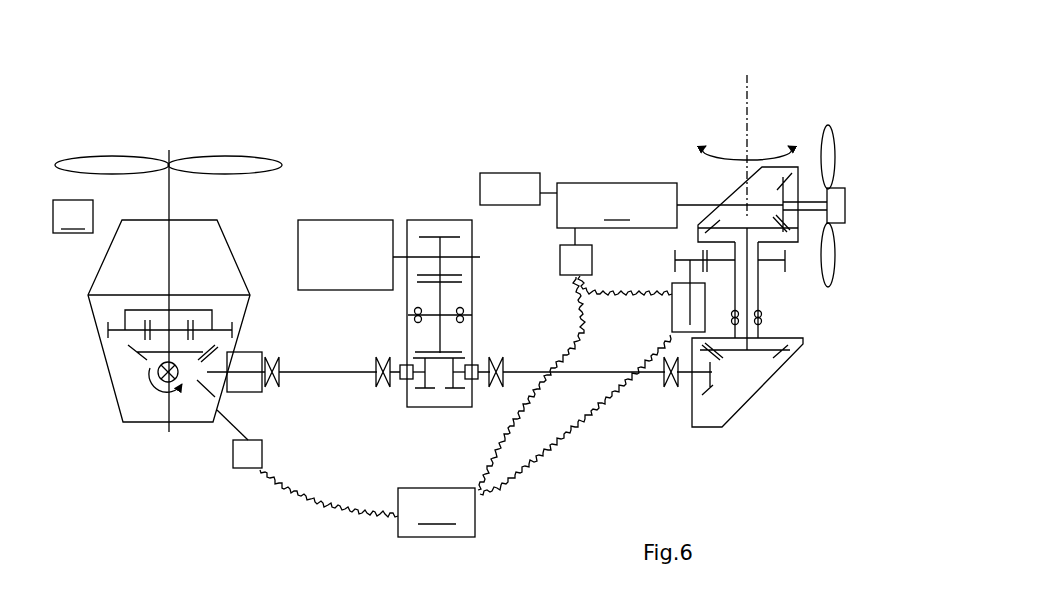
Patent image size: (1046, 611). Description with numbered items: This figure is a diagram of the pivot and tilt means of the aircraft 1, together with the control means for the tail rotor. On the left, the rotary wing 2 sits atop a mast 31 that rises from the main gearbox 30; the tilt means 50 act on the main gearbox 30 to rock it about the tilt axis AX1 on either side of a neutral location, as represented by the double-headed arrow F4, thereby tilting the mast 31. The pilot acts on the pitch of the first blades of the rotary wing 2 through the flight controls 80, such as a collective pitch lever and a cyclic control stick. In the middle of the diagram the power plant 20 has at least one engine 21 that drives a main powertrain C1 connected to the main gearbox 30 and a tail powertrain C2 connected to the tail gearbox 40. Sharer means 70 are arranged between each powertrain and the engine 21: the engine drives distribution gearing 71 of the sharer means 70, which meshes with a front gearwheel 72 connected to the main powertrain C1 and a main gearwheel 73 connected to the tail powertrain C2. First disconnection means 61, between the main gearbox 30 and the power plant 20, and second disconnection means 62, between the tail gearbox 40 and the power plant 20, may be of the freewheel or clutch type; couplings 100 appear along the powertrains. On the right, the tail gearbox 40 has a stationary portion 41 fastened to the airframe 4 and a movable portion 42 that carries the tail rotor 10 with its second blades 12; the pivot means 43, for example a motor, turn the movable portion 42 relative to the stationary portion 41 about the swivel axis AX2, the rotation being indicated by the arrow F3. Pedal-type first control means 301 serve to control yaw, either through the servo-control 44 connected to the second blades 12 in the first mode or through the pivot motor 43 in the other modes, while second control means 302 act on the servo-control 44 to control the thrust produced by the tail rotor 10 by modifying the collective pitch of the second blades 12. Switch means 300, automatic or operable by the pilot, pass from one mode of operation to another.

The aircraft 1 is at (661, 45).
The rotary wing 2 is at (286, 126).
The airframe 4 is at (748, 412).
The tail rotor 10 is at (840, 321).
The second blades 12 is at (827, 128).
The power plant 20 is at (440, 198).
The engine 21 is at (345, 220).
The main gearbox 30 is at (246, 236).
The mast 31 is at (170, 188).
The tail gearbox 40 is at (713, 258).
The stationary portion 41 is at (752, 411).
The movable portion 42 is at (688, 235).
The pivot means 43 is at (670, 313).
The servo-control 44 is at (670, 205).
The tilt means 50 is at (245, 460).
The first disconnection means 61 is at (402, 388).
The second disconnection means 62 is at (481, 392).
The sharer means 70 is at (448, 295).
The distribution gearing 71 is at (440, 293).
The front gearwheel 72 is at (412, 353).
The main gearwheel 73 is at (465, 354).
The flight controls 80 is at (118, 175).
The couplings 100 is at (381, 400).
The switch means 300 is at (466, 406).
The first control means 301 is at (558, 262).
The second control means 302 is at (523, 173).
The tilt axis AX1 is at (178, 368).
The swivel axis AX2 is at (745, 100).
The main powertrain C1 is at (348, 362).
The tail powertrain C2 is at (537, 366).
The rotation direction F3 is at (730, 153).
The double-headed arrow F4 is at (155, 392).